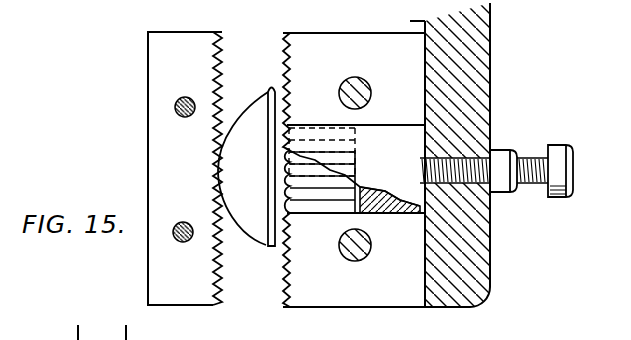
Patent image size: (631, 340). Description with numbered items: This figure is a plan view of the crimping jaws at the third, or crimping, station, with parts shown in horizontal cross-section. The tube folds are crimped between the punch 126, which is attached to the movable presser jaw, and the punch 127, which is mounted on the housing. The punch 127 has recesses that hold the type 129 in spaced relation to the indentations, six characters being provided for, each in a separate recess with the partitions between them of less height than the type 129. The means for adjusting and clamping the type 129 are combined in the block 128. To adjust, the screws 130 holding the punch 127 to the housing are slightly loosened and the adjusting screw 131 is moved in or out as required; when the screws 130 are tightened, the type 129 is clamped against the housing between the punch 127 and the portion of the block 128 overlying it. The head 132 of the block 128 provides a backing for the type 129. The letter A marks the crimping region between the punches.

The punch 126 is at (156, 146).
The punch 127 is at (381, 290).
The block 128 is at (400, 148).
The type 129 is at (315, 197).
The screws 130 is at (352, 79).
The adjusting screw 131 is at (565, 146).
The head 132 is at (380, 206).
The dome A is at (250, 214).